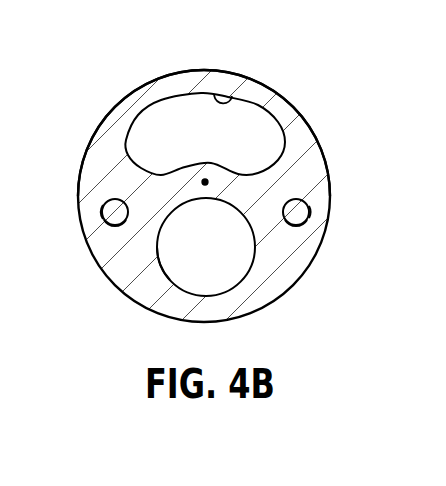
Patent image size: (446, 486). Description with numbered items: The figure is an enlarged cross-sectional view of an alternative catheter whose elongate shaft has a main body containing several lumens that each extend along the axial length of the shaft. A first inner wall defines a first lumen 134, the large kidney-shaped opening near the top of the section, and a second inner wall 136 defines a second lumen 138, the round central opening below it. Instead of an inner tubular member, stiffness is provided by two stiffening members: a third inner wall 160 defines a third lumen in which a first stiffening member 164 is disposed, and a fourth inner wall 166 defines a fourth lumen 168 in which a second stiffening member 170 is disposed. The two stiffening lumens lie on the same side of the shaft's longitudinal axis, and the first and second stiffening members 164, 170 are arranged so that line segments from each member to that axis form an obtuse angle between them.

The first lumen 134 is at (198, 143).
The second lumen 138 is at (222, 259).
The second inner wall 136 is at (163, 265).
The first stiffening member 164 is at (103, 215).
The third inner wall 160 is at (117, 225).
The fourth lumen 168 is at (296, 200).
The second stiffening member 170 is at (300, 212).
The fourth inner wall 166 is at (305, 223).